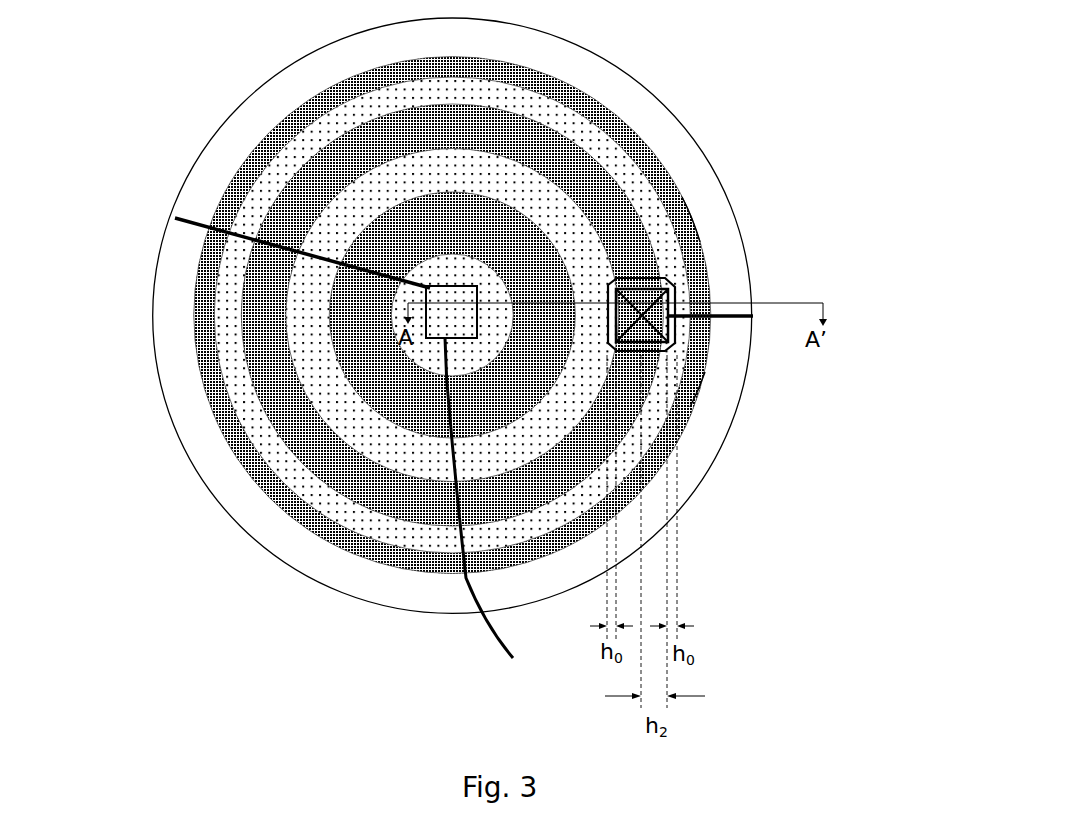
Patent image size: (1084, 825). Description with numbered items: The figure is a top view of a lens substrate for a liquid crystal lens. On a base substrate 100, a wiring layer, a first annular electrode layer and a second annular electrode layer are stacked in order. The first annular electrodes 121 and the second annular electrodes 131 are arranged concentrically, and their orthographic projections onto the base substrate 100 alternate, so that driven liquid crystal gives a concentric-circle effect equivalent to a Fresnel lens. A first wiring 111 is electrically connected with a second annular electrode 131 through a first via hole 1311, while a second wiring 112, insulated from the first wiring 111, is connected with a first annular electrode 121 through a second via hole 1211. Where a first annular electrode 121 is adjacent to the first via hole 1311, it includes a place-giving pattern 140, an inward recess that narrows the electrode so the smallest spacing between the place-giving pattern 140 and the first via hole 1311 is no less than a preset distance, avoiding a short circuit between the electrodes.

The base substrate 100 is at (360, 577).
The first wiring 111 is at (727, 318).
The second wiring 112 is at (188, 220).
The first annular electrode 121 is at (293, 163).
The second via hole 1211 is at (508, 506).
The second annular electrode 131 is at (322, 95).
The first via hole 1311 is at (692, 220).
The place-giving pattern 140 is at (698, 388).